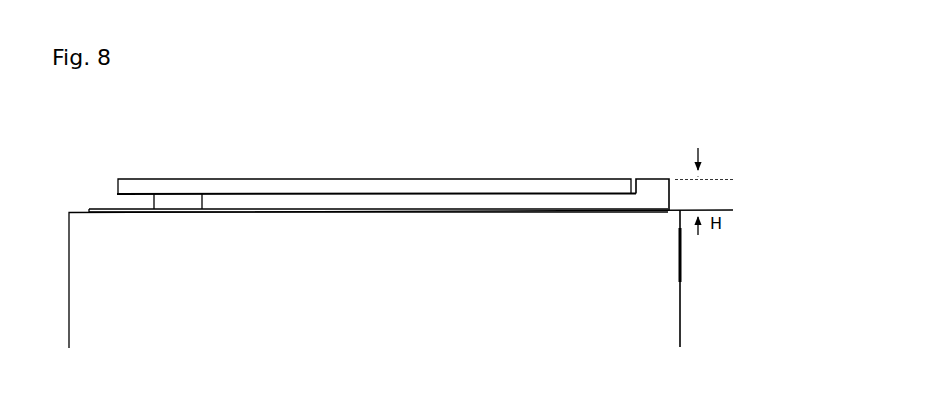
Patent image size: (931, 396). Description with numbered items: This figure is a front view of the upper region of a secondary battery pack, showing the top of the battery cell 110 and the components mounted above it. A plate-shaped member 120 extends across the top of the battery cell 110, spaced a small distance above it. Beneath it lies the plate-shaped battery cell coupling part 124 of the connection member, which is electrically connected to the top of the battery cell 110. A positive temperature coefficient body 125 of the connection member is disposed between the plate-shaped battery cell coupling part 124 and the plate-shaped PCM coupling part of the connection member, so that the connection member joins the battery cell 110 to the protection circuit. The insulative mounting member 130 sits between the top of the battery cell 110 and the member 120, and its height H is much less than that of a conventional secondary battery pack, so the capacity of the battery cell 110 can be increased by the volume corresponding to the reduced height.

The battery cell 110 is at (661, 283).
The plate 120 is at (479, 184).
The plate-shaped battery cell coupling part 124 is at (112, 211).
The positive temperature coefficient (PTC) body 125 is at (188, 199).
The insulative mounting member 130 is at (397, 204).